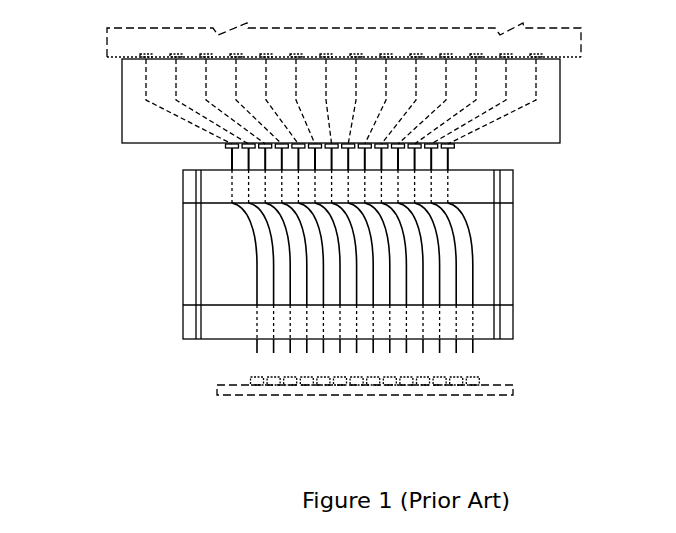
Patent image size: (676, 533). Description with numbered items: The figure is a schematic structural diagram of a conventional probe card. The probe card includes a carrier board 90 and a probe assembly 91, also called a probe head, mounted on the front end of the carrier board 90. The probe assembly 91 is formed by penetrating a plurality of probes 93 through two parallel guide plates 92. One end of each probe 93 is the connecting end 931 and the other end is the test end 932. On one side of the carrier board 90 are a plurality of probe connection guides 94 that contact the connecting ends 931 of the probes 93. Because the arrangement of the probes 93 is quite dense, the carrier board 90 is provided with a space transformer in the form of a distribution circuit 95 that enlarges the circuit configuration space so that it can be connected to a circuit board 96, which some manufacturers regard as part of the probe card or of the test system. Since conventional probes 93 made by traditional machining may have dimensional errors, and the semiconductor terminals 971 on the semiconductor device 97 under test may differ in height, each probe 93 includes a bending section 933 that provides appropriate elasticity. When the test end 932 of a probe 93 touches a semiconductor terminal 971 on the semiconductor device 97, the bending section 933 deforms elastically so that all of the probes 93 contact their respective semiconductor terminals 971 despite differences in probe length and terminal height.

The carrier board 90 is at (560, 128).
The probe assembly 91 is at (562, 170).
The guide plates 92 is at (183, 188).
The probe 93 is at (257, 248).
The probe connection guides 94 is at (225, 146).
The distribution circuit 95 is at (172, 114).
The circuit board 96 is at (107, 42).
The semiconductor device 97 is at (217, 386).
The connecting end 931 is at (232, 160).
The test end 932 is at (254, 346).
The bending section 933 is at (258, 276).
The semiconductor terminals 971 is at (480, 368).